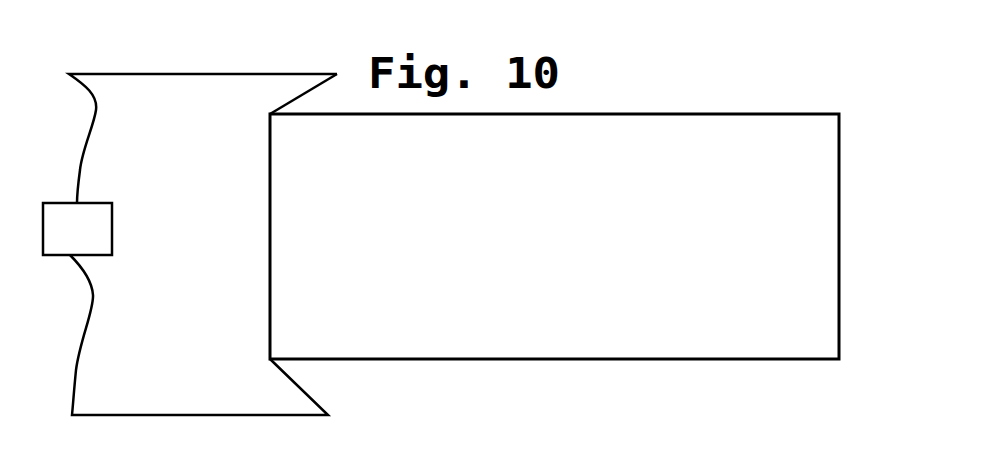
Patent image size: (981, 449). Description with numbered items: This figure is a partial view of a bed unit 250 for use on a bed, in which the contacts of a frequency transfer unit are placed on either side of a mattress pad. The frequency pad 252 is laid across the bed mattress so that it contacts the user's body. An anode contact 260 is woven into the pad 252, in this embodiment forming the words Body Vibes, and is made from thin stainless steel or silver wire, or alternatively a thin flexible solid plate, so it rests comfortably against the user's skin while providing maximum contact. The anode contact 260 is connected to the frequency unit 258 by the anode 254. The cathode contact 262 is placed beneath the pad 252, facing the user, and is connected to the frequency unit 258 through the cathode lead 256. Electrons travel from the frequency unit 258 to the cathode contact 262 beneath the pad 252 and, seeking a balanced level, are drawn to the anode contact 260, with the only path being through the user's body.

The bed unit 250 is at (774, 65).
The frequency pad 252 is at (785, 298).
The anode 254 is at (192, 415).
The cathode lead 256 is at (168, 74).
The frequency unit 258 is at (80, 226).
The anode contact 260 is at (705, 82).
The cathode contact 262 is at (607, 360).